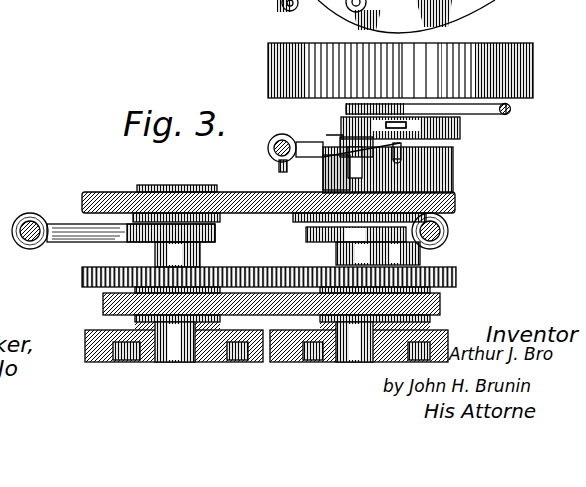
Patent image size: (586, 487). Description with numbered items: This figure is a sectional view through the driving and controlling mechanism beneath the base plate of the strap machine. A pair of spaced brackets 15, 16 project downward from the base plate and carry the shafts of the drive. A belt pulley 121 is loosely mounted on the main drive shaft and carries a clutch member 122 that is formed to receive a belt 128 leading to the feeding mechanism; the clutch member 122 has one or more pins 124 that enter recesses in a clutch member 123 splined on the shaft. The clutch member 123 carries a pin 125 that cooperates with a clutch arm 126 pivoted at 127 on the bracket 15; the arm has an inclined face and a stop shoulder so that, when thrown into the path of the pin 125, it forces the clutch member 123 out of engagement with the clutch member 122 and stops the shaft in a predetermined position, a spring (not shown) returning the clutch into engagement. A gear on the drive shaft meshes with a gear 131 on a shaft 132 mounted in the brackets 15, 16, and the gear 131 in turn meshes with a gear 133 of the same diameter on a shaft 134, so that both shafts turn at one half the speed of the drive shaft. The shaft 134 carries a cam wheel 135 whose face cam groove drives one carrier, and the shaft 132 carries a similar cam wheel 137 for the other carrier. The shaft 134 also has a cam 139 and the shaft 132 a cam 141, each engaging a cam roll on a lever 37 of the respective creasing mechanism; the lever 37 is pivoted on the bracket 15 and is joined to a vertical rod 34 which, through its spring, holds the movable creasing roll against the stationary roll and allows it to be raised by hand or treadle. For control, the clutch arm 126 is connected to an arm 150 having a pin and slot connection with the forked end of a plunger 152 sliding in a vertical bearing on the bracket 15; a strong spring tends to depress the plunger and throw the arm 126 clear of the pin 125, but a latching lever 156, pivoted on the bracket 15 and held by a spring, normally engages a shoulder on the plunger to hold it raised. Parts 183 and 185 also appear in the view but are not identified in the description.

The bracket 15 is at (107, 198).
The bracket 16 is at (105, 302).
The vertical rod 34 is at (31, 230).
The lever 37 is at (453, 217).
The belt pulley 121 is at (533, 68).
The clutch member 122 is at (460, 129).
The clutch member 123 is at (453, 176).
The pin 124 is at (393, 128).
The pin 125 is at (340, 162).
The clutch arm 126 is at (341, 122).
The pivot 127 is at (284, 4).
The belt 128 is at (490, 114).
The gear 131 is at (455, 276).
The shaft 132 is at (358, 352).
The gear 133 is at (85, 276).
The shaft 134 is at (170, 351).
The cam wheel 135 is at (214, 354).
The cam wheel 137 is at (300, 356).
The cam 139 is at (215, 233).
The cam 141 is at (308, 233).
The arm 150 is at (325, 157).
The plunger 152 is at (272, 136).
The latching lever 156 is at (270, 153).
The spring 183 is at (331, 0).
The stop pin 185 is at (436, 142).